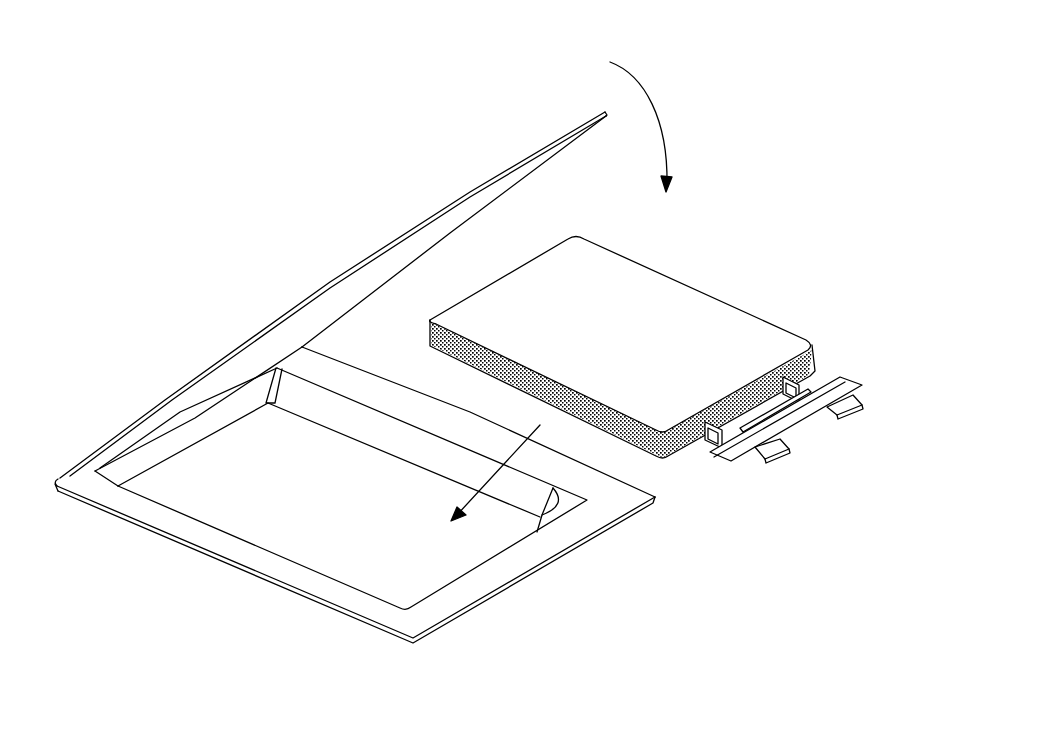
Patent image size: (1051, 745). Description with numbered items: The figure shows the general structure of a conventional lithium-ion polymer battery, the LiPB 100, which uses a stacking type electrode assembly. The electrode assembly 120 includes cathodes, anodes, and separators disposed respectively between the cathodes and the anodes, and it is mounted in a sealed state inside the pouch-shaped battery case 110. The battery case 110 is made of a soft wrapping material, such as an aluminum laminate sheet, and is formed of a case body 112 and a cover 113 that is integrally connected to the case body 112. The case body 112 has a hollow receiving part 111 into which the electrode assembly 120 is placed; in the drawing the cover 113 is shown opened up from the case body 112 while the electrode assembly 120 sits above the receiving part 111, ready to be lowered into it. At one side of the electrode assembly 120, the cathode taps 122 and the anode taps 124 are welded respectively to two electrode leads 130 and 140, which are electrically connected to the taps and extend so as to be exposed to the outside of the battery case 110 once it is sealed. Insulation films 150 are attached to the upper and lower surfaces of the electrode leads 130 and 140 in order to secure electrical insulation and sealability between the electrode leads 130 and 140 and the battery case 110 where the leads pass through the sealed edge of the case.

The LiPB 100 is at (113, 66).
The battery case 110 is at (165, 345).
The receiving part 111 is at (440, 574).
The case body 112 is at (292, 597).
The cover 113 is at (392, 236).
The electrode assembly 120 is at (705, 314).
The cathode taps 122 is at (716, 448).
The anode taps 124 is at (798, 382).
The electrode lead 130 is at (772, 453).
The electrode lead 140 is at (866, 402).
The insulation films 150 is at (808, 424).